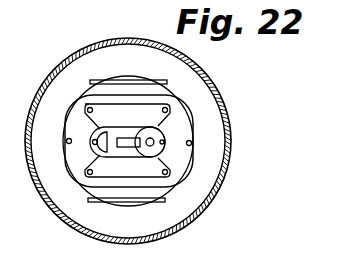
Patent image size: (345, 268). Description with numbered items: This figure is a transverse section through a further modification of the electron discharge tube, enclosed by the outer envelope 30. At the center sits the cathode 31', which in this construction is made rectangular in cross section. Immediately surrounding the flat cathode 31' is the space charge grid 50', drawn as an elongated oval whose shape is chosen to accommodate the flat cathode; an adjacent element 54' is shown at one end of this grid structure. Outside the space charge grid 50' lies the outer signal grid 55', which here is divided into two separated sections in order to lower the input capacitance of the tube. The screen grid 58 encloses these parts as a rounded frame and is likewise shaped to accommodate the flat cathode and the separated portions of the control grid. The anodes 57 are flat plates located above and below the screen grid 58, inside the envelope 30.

The housing ring 30 is at (197, 219).
The anodes 57 is at (100, 80).
The screen grid 58 is at (183, 112).
The outer signal grid 55' is at (176, 122).
The pivot disc 54' is at (205, 149).
The cathode 31' is at (197, 135).
The space charge grid 50' is at (179, 163).